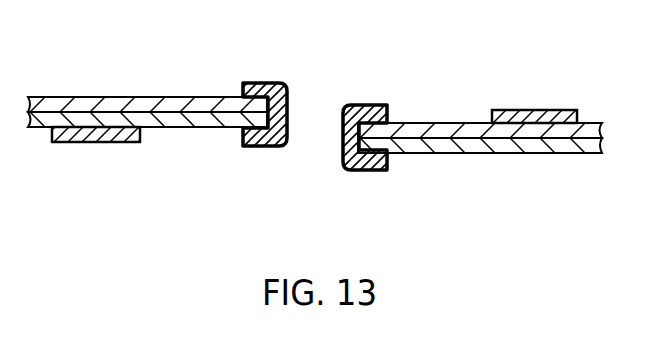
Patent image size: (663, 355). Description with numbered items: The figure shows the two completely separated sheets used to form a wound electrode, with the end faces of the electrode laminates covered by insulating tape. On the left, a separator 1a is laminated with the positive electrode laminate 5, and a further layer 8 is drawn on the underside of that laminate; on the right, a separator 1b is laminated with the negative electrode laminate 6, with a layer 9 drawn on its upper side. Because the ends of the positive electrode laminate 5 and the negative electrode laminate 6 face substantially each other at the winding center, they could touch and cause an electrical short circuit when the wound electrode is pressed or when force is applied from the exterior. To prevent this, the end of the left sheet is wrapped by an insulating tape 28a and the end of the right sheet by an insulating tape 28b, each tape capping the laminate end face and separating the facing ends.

The separator 1a is at (148, 97).
The positive electrode laminate 5 is at (211, 121).
The electrode plate 8 is at (96, 143).
The insulating tape 28a is at (272, 83).
The negative electrode laminate 6 is at (438, 123).
The separator 1b is at (432, 145).
The electrode plate 9 is at (537, 114).
The insulating tape 28b is at (363, 172).